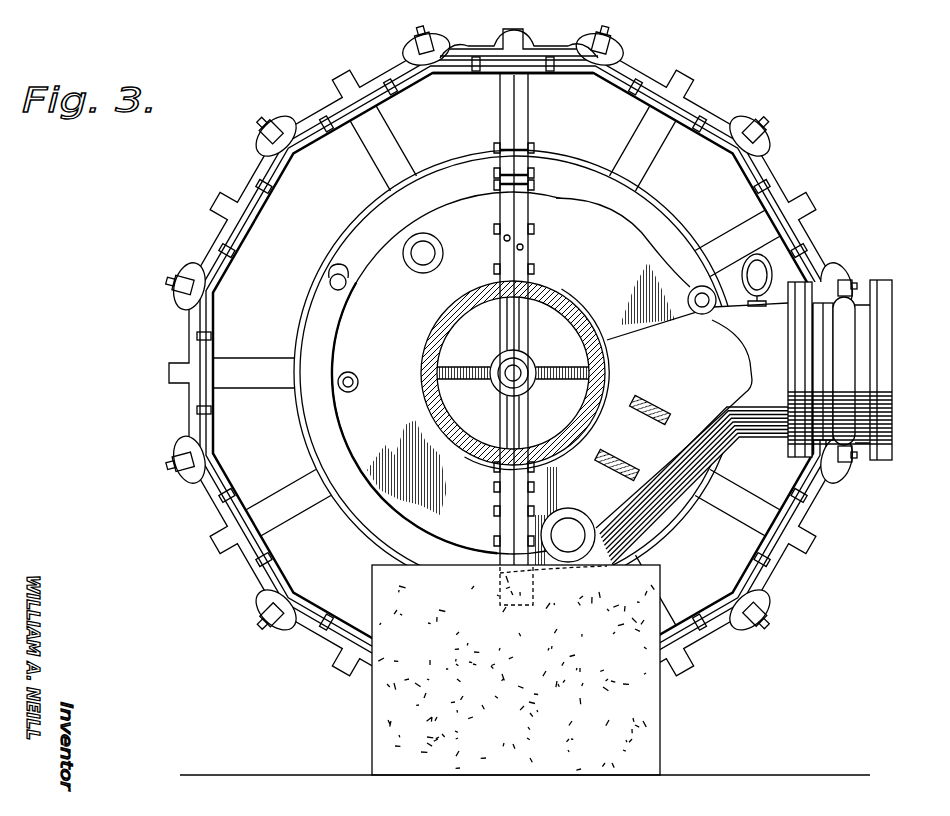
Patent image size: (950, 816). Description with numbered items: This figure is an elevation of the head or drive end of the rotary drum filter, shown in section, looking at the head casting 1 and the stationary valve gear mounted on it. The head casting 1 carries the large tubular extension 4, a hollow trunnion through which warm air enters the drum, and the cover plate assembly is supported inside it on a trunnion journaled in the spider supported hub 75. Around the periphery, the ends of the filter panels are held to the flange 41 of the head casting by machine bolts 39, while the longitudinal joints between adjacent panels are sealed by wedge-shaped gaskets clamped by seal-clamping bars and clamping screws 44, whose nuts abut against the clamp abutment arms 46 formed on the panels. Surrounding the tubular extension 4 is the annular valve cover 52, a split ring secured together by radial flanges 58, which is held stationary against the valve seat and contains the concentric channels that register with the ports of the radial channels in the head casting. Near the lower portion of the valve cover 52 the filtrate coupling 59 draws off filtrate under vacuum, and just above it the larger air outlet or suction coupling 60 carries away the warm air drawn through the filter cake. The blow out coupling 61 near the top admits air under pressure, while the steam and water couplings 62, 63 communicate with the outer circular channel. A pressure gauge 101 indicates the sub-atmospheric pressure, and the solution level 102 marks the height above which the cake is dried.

The head casting 1 is at (347, 143).
The solution level 102 is at (337, 78).
The machine bolts 39 is at (553, 55).
The flange of the head casting 41 is at (478, 75).
The clamping screws 44 is at (598, 48).
The clamp abutment arms 46 is at (754, 128).
The annular valve cover 52 is at (562, 164).
The radial flanges 58 is at (518, 205).
The blow out coupling 61 is at (404, 258).
The water coupling 63 is at (333, 283).
The pressure gauge 101 is at (747, 255).
The tubular extension 4 is at (533, 338).
The spider supported hub 75 is at (530, 366).
The steam coupling 62 is at (700, 302).
The air outlet or suction coupling 60 is at (886, 346).
The filtrate coupling 59 is at (593, 545).